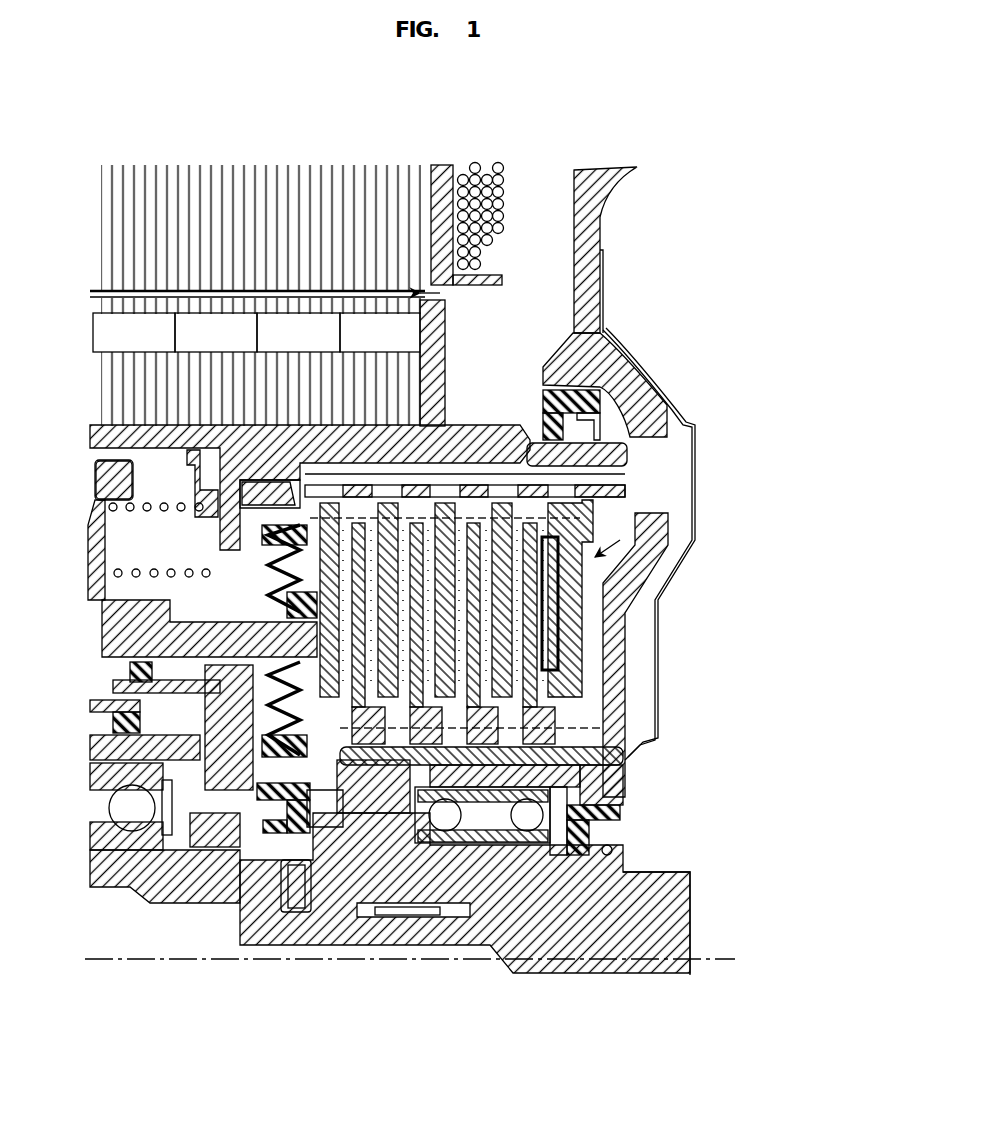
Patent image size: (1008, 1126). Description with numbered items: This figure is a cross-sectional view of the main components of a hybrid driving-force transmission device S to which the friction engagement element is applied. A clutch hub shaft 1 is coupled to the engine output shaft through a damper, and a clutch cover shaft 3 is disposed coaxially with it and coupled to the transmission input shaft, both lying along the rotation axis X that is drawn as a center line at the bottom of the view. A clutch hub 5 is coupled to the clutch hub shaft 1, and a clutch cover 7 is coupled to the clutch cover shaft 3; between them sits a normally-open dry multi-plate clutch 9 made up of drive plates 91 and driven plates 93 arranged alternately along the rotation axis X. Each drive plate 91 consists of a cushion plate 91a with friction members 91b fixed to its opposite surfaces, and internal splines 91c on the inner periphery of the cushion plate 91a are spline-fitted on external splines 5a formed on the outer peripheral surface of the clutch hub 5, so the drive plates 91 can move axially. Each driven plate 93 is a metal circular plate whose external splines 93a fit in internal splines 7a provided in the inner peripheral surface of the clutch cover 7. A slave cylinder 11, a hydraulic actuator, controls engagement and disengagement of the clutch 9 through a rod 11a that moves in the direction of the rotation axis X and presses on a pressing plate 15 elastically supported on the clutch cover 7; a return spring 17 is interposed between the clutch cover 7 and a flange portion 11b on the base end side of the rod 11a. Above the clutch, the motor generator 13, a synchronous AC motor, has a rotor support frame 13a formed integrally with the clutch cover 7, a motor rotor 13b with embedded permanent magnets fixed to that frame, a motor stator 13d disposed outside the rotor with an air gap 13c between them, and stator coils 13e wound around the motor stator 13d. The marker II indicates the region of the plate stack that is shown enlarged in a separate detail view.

The hybrid driving-force transmission device S is at (625, 128).
The clutch hub shaft 1 is at (685, 915).
The clutch cover shaft 3 is at (252, 940).
The clutch hub 5 is at (363, 803).
The external splines 5a is at (615, 765).
The clutch cover 7 is at (625, 495).
The internal splines 7a is at (353, 503).
The normally-open dry multi-plate clutch 9 is at (640, 535).
The slave cylinder 11 is at (108, 662).
The rod 11a is at (262, 620).
The flange portion 11b is at (98, 487).
The motor generator 13 is at (577, 315).
The rotor support frame 13a is at (440, 357).
The motor rotor 13b is at (447, 325).
The air gap 13c is at (440, 293).
The motor stator 13d is at (420, 230).
The stator coils 13e is at (500, 188).
The pressing plate 15 is at (280, 660).
The return spring 17 is at (155, 570).
The drive plate 91 is at (338, 745).
The cushion plate 91a is at (545, 440).
The friction members 91b is at (560, 468).
The internal splines 91c is at (450, 760).
The driven plate 93 is at (330, 700).
The external splines 93a is at (330, 512).
The section II is at (560, 622).
The rotation axis X is at (713, 962).